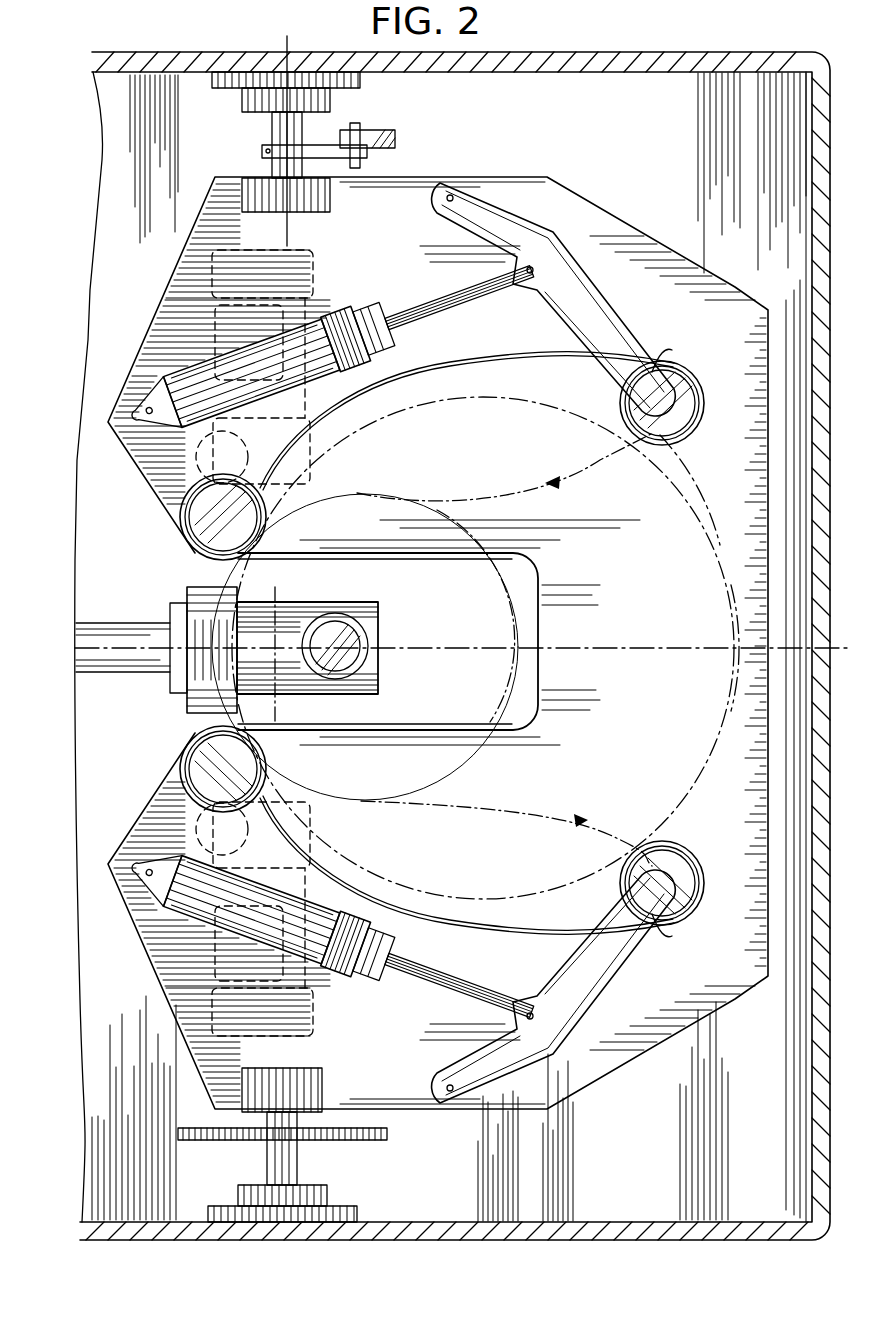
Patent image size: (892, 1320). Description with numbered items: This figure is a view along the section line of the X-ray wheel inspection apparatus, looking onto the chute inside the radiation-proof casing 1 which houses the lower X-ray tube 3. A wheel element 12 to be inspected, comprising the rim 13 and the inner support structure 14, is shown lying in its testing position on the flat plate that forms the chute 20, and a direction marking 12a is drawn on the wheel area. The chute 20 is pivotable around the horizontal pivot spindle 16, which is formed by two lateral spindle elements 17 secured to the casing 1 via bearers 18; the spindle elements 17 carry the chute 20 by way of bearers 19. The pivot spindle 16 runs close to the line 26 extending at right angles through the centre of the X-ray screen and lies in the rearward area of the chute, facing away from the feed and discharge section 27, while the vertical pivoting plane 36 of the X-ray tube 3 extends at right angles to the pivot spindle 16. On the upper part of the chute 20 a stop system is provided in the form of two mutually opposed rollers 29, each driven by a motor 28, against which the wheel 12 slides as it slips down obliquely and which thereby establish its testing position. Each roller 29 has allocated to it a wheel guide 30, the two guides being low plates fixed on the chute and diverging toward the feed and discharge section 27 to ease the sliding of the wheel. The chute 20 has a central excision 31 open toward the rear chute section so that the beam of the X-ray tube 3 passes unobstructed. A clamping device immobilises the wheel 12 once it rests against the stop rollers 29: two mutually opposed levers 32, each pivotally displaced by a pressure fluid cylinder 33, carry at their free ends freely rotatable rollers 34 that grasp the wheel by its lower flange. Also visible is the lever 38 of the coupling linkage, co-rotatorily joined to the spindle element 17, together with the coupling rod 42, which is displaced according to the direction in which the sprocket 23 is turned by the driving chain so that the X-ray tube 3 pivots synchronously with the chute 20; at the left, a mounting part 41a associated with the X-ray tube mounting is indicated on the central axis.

The radiation-proof casing 1 is at (487, 61).
The X-ray tube 3 is at (372, 676).
The wheel element 12 is at (696, 496).
The winding direction 12a is at (378, 481).
The rim 13 is at (690, 523).
The inner support structure 14 is at (611, 612).
The horizontal pivot spindle 16 is at (289, 229).
The spindle element 17 is at (276, 127).
The bearer 18 is at (363, 79).
The bearer 19 is at (322, 199).
The chute 20 is at (578, 208).
The sprocket 23 is at (390, 1135).
The line at right angles 26 is at (337, 648).
The feed and discharge section 27 is at (730, 622).
The motor 28 is at (222, 320).
The roller 29 is at (198, 520).
The wheel guide 30 is at (458, 375).
The central excision 31 is at (428, 732).
The lever 32 is at (560, 282).
The pressure fluid cylinder 33 is at (358, 318).
The roller 34 is at (680, 378).
The pivoting plane 36 is at (568, 649).
The lever 38 is at (264, 152).
The shaft end 41a is at (133, 680).
The coupling rod 42 is at (395, 143).